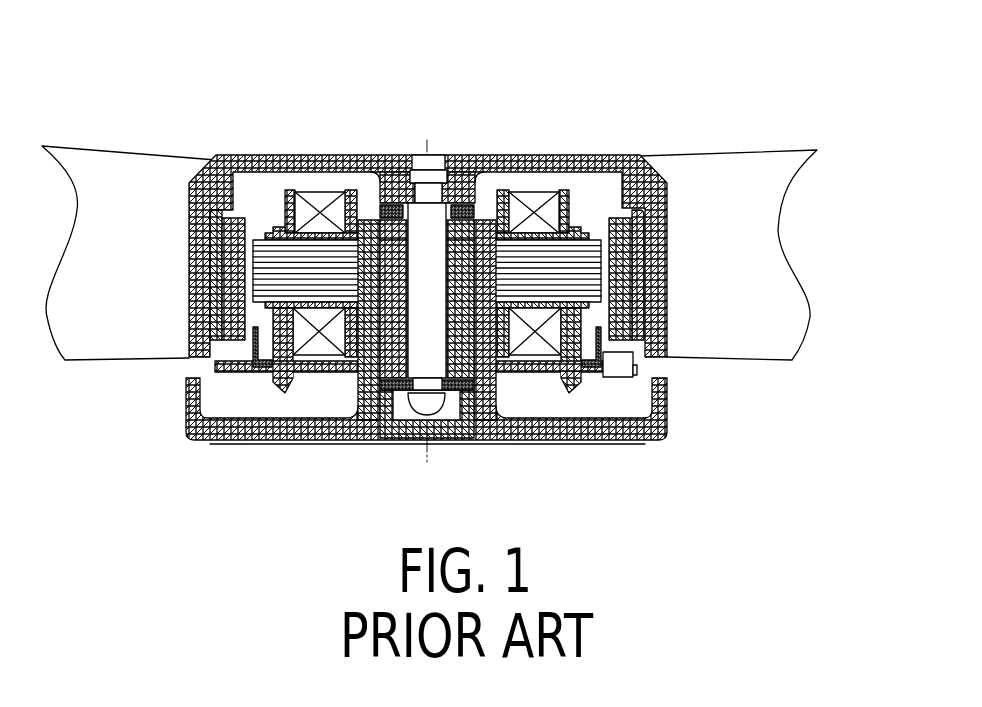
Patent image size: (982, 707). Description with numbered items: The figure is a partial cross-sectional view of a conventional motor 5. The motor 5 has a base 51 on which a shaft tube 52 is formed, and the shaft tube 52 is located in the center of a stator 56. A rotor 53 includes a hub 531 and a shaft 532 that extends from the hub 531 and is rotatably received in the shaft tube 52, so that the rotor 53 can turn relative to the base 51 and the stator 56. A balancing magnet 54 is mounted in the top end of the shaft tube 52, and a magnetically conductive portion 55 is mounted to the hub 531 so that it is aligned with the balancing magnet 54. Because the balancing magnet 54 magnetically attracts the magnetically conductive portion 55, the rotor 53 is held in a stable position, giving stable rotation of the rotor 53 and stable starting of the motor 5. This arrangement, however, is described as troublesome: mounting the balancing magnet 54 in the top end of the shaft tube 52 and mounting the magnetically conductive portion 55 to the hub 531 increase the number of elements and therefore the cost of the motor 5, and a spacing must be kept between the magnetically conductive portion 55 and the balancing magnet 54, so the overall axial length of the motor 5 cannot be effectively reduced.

The motor 5 is at (179, 110).
The base 51 is at (622, 432).
The shaft tube 52 is at (511, 438).
The rotor 53 is at (643, 180).
The hub 531 is at (383, 197).
The shaft 532 is at (433, 332).
The balancing magnet 54 is at (470, 213).
The magnetically conductive portion 55 is at (488, 218).
The stator 56 is at (600, 245).